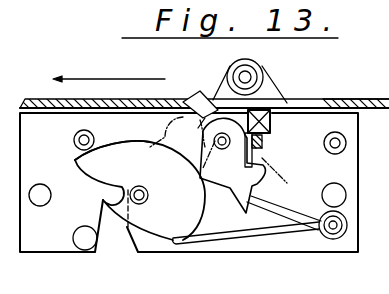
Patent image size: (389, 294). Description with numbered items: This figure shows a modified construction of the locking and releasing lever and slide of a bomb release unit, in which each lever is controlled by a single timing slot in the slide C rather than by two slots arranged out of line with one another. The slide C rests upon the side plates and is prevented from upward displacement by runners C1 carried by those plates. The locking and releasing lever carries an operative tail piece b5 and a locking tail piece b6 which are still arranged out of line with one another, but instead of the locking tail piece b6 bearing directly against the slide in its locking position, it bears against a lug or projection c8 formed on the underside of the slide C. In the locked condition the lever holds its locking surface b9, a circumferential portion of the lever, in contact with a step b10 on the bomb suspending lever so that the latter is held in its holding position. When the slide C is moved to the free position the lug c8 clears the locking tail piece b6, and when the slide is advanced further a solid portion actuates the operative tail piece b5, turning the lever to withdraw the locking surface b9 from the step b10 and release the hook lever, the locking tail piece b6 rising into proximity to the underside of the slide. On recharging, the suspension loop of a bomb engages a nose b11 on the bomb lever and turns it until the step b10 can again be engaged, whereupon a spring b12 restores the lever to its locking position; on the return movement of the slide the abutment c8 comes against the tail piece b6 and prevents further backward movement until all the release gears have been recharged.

The operative tail piece b5 is at (201, 96).
The runners C1 is at (263, 70).
The lug or projection c8 is at (278, 107).
The slide C is at (352, 106).
The locking tail piece b6 is at (259, 141).
The step b10 is at (203, 188).
The nose b11 is at (75, 158).
The locking surface b9 is at (221, 190).
The spring b12 is at (307, 231).